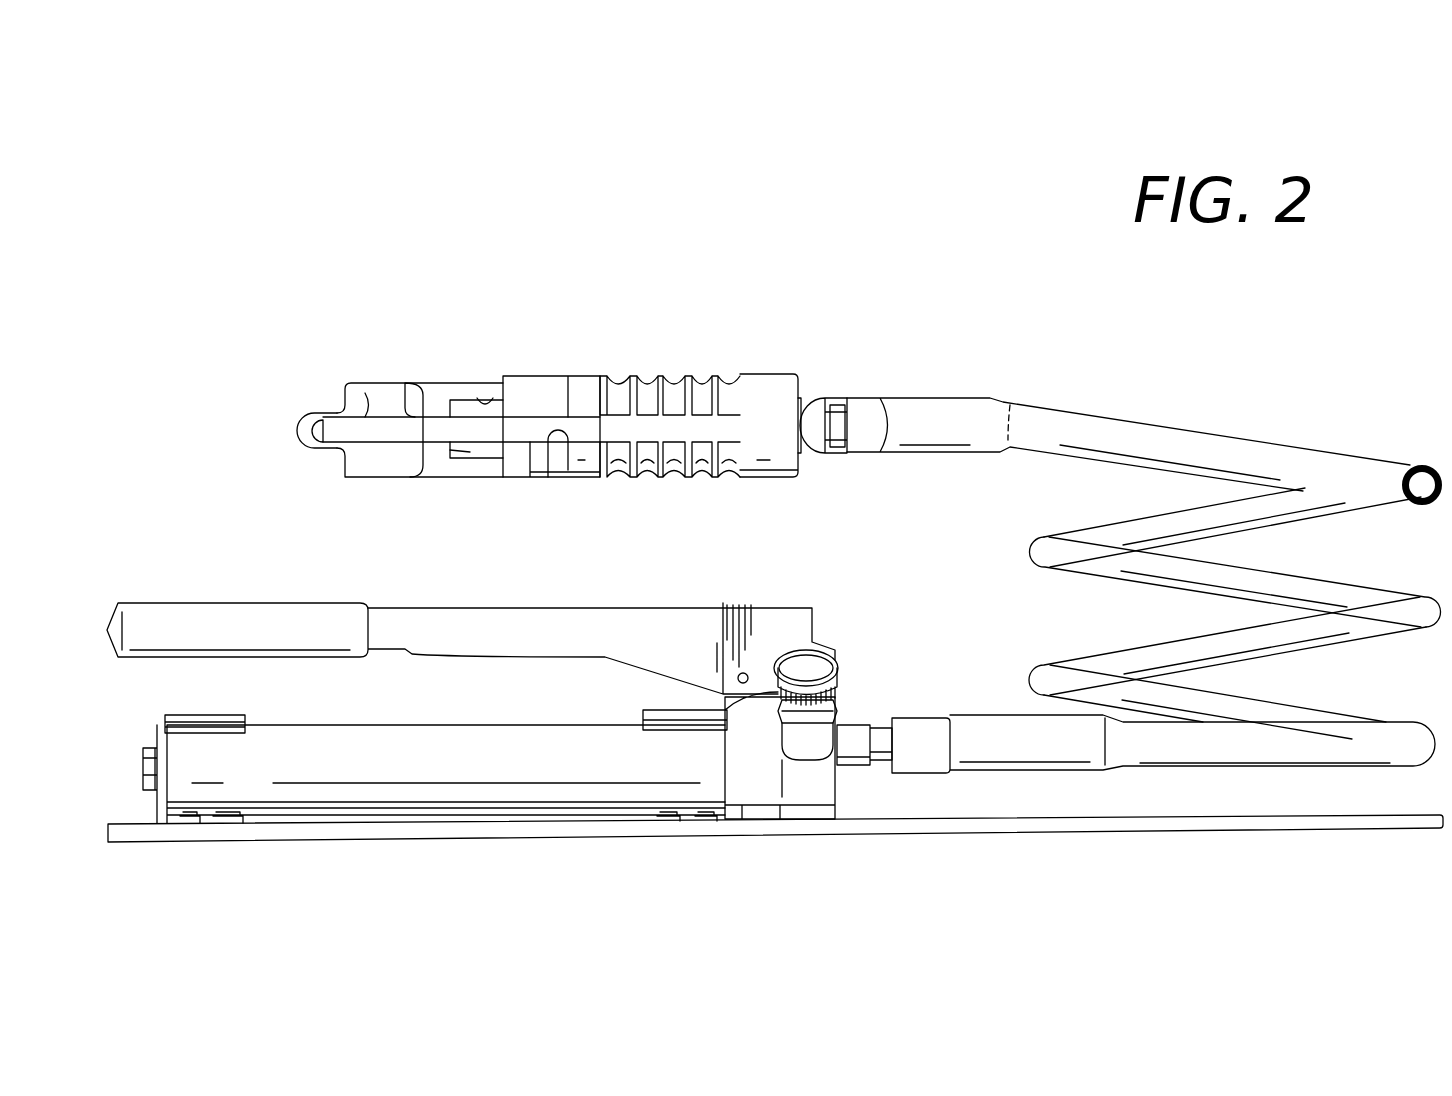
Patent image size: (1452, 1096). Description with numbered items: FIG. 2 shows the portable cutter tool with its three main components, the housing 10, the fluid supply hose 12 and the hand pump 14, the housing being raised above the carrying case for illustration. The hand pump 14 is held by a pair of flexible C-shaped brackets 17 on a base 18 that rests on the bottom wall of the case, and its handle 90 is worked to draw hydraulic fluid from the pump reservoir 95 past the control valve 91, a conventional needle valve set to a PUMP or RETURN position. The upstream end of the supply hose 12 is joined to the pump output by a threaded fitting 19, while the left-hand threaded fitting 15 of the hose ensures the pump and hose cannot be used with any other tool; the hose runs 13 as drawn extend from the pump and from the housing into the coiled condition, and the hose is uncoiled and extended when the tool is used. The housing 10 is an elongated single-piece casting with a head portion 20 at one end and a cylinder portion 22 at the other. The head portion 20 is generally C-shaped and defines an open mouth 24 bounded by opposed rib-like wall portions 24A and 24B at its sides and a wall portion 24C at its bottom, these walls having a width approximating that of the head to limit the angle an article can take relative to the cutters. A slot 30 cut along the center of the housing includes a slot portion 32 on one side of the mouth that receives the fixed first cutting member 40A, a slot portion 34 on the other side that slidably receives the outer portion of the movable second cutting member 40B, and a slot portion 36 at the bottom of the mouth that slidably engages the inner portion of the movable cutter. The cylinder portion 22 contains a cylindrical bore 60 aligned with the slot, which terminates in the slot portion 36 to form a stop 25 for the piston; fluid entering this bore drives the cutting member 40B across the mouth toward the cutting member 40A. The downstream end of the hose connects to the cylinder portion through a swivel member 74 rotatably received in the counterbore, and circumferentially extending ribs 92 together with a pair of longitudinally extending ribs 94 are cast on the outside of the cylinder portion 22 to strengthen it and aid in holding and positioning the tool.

The housing 10 is at (660, 282).
The fluid supply hose 12 is at (1045, 586).
The hose 13 is at (1000, 395).
The hand pump 14 is at (398, 693).
The threaded fitting 15 is at (880, 765).
The brackets 17 is at (165, 714).
The base 18 is at (662, 838).
The threaded fitting 19 is at (855, 398).
The head portion 20 is at (396, 483).
The cylinder portion 22 is at (782, 477).
The mouth 24 is at (437, 460).
The rib-like wall portion 24A is at (430, 482).
The rib-like wall portion 24B is at (450, 450).
The wall portion 24C is at (446, 383).
The stop 25 is at (487, 482).
The slot 30 is at (305, 430).
The slot portion 32 is at (368, 435).
The slot portion 34 is at (530, 483).
The slot portion 36 is at (400, 385).
The first cutting member 40A is at (370, 433).
The second cutting member 40B is at (516, 425).
The cylindrical bore 60 is at (482, 393).
The swivel member 74 is at (808, 398).
The handle 90 is at (262, 603).
The control valve 91 is at (838, 702).
The circumferentially extending ribs 92 is at (710, 378).
The longitudinally extending ribs 94 is at (697, 427).
The pump reservoir 95 is at (462, 733).